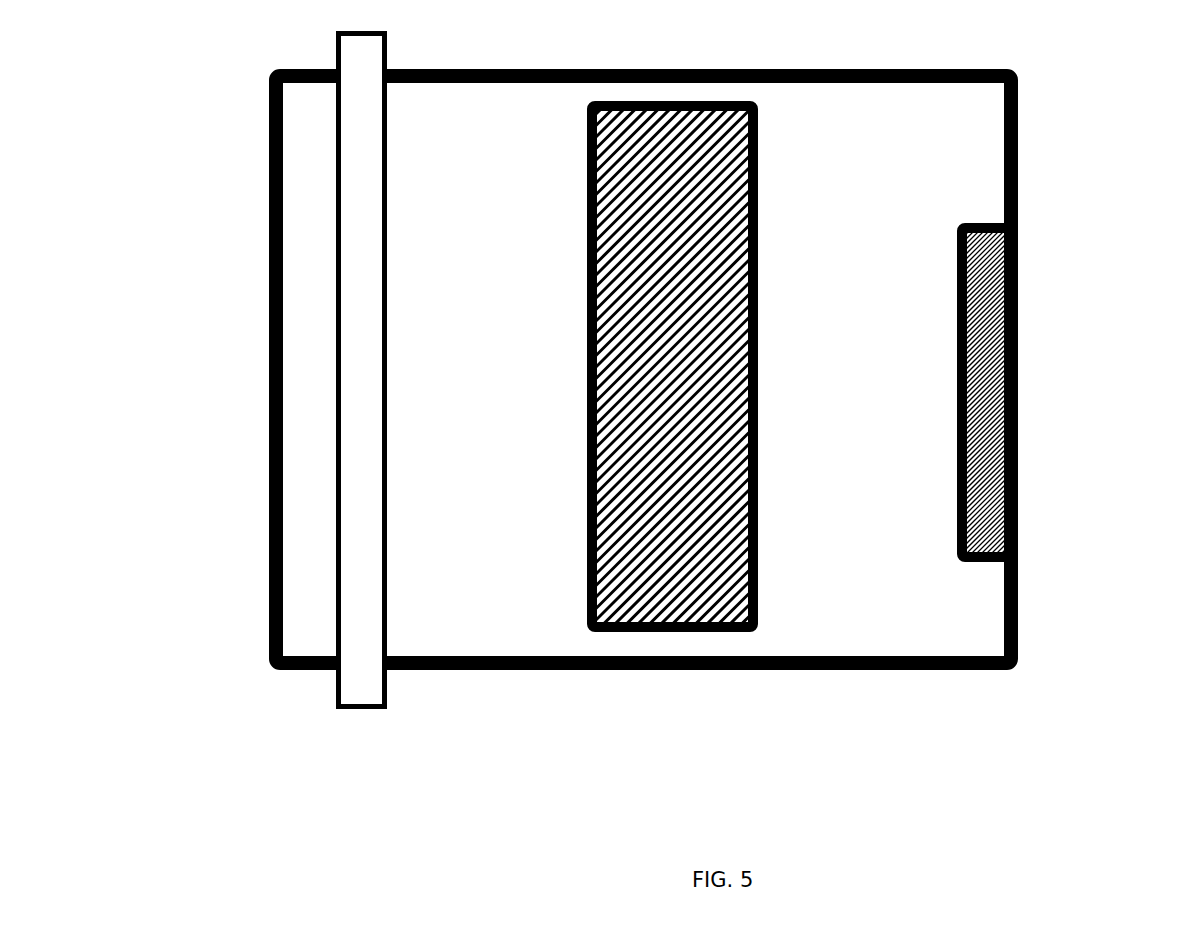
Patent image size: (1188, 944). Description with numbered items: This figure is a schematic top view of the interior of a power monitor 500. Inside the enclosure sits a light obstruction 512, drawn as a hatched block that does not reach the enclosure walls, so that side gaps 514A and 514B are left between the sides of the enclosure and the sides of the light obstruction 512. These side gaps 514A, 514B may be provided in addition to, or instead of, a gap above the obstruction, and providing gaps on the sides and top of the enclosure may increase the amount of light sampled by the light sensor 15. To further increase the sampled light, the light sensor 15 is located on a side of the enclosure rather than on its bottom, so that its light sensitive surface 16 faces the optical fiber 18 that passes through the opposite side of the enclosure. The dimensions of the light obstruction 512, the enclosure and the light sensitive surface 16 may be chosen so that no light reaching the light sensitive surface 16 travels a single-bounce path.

The power monitor 500 is at (438, 814).
The light sensor 15 is at (1018, 510).
The light sensitive surface 16 is at (957, 508).
The light obstruction 512 is at (681, 612).
The side gap 514A is at (702, 93).
The side gap 514B is at (699, 655).
The optical fiber 18 is at (323, 521).